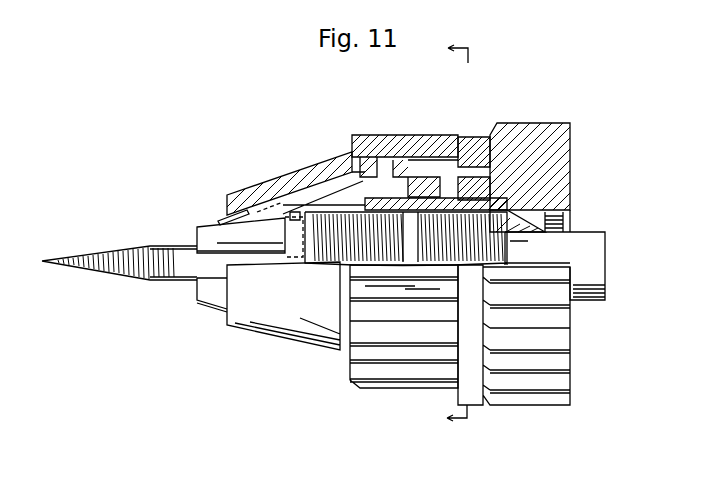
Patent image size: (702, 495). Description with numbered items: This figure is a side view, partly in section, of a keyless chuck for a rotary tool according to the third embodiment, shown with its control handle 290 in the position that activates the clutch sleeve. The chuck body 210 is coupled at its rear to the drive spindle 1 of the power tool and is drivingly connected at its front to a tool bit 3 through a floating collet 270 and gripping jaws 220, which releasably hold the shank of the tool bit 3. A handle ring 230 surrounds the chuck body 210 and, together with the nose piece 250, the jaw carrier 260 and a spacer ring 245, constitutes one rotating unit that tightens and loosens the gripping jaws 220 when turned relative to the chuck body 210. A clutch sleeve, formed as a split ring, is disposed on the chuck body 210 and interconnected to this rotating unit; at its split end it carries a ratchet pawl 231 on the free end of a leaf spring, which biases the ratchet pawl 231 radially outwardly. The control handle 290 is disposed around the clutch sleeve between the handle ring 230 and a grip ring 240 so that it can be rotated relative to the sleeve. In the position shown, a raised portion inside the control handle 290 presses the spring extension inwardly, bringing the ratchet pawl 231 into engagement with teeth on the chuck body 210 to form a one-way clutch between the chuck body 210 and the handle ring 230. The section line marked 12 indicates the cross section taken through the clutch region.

The drive spindle 1 is at (593, 263).
The tool bit 3 is at (92, 270).
The section line 12- 12 is at (448, 235).
The chuck body 210 is at (493, 207).
The gripping jaws 220 is at (202, 303).
The handle ring 230 is at (398, 393).
The ratchet pawl 231 is at (493, 180).
The grip ring 240 is at (538, 407).
The spacer ring 245 is at (420, 138).
The nose piece 250 is at (293, 357).
The jaw carrier 260 is at (328, 192).
The floating collet 270 is at (300, 253).
The control handle 290 is at (477, 137).